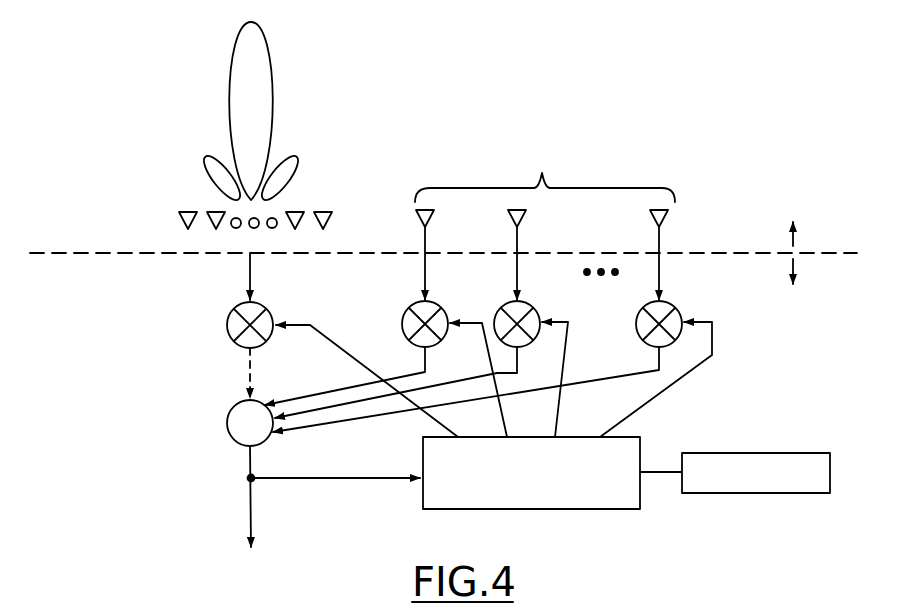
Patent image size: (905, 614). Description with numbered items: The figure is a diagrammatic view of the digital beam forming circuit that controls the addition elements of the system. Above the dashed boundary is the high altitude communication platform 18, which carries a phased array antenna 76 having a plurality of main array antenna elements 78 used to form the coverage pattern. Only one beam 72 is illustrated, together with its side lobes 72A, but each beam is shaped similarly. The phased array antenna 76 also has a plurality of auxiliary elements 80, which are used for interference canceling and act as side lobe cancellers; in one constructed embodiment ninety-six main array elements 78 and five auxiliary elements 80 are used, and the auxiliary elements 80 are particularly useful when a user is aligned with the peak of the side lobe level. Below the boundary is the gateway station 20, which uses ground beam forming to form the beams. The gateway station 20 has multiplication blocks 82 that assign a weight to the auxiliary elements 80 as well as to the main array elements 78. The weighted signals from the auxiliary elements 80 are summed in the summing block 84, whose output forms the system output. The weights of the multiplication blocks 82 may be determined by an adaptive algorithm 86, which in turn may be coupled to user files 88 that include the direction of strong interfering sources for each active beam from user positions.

The high altitude communication platform 18 is at (664, 79).
The gateway station 20 is at (772, 366).
The beam 72 is at (259, 31).
The side lobes 72A is at (206, 157).
The phased array antenna 76 is at (389, 106).
The main array antenna elements 78 is at (160, 221).
The auxiliary elements 80 is at (512, 210).
The multiplication blocks 82 is at (235, 309).
The summing block 84 is at (228, 418).
The adaptive algorithm 86 is at (587, 509).
The user files 88 is at (770, 493).